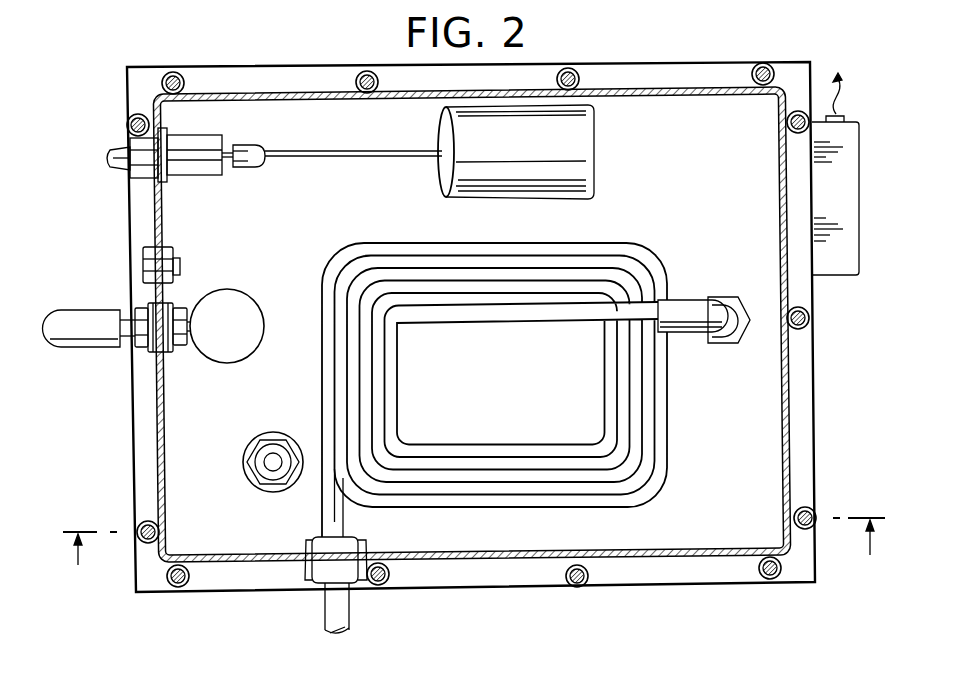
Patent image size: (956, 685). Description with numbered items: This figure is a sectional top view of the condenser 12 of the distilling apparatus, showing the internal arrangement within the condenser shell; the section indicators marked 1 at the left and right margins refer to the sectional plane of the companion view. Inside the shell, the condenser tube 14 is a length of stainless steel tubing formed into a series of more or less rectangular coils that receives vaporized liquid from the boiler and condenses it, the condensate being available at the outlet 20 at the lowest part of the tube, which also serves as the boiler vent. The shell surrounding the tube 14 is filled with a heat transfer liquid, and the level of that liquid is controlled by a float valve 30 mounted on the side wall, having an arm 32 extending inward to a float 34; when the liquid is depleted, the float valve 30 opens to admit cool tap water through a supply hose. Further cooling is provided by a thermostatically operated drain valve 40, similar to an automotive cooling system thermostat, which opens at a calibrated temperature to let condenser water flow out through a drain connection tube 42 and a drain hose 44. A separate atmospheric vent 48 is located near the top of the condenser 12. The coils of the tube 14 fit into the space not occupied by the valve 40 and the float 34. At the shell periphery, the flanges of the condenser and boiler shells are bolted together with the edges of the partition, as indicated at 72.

The section line 1- 1 is at (474, 556).
The condenser 12 is at (156, 412).
The condenser tube 14 is at (486, 312).
The outlet 20 is at (303, 545).
The float valve 30 is at (197, 172).
The arm 32 is at (318, 150).
The float 34 is at (578, 149).
The thermostatically operated drain valve 40 is at (249, 306).
The drain connection tube 42 is at (188, 340).
The drain hose 44 is at (63, 322).
The atmospheric vent 48 is at (143, 265).
The bolted flange joint 72 is at (814, 498).